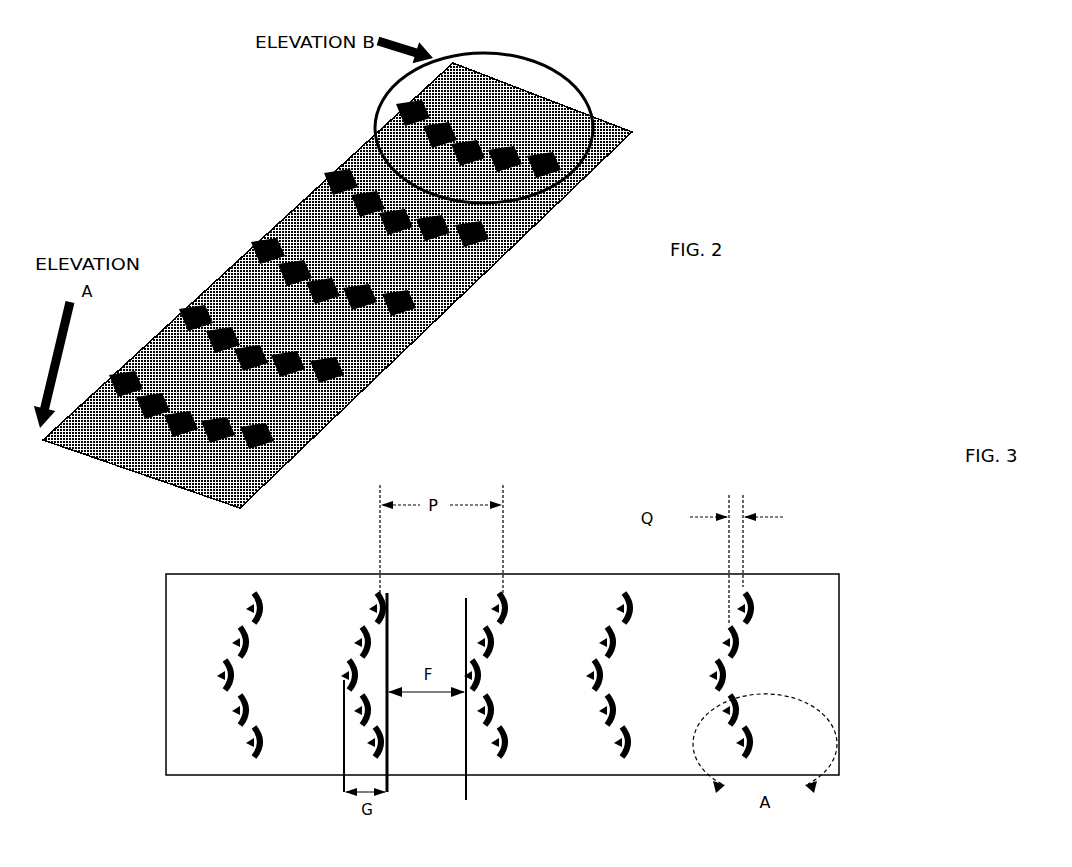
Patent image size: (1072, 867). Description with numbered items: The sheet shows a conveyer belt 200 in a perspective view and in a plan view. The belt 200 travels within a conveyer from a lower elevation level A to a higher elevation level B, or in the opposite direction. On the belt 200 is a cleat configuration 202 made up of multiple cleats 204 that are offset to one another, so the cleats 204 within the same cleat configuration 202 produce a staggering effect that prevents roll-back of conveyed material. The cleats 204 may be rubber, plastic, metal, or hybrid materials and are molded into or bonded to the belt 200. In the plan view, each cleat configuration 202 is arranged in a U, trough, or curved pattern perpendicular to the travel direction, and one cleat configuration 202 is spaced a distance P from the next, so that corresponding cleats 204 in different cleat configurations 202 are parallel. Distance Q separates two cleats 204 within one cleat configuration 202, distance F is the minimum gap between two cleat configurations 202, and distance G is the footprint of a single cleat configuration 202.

In FIG. 2, the belt 200 is at (614, 55).
In FIG. 3, the belt 200 is at (735, 455).
In FIG. 2, the cleat configuration 202 is at (576, 128).
In FIG. 2, the cleat 204 is at (533, 234).